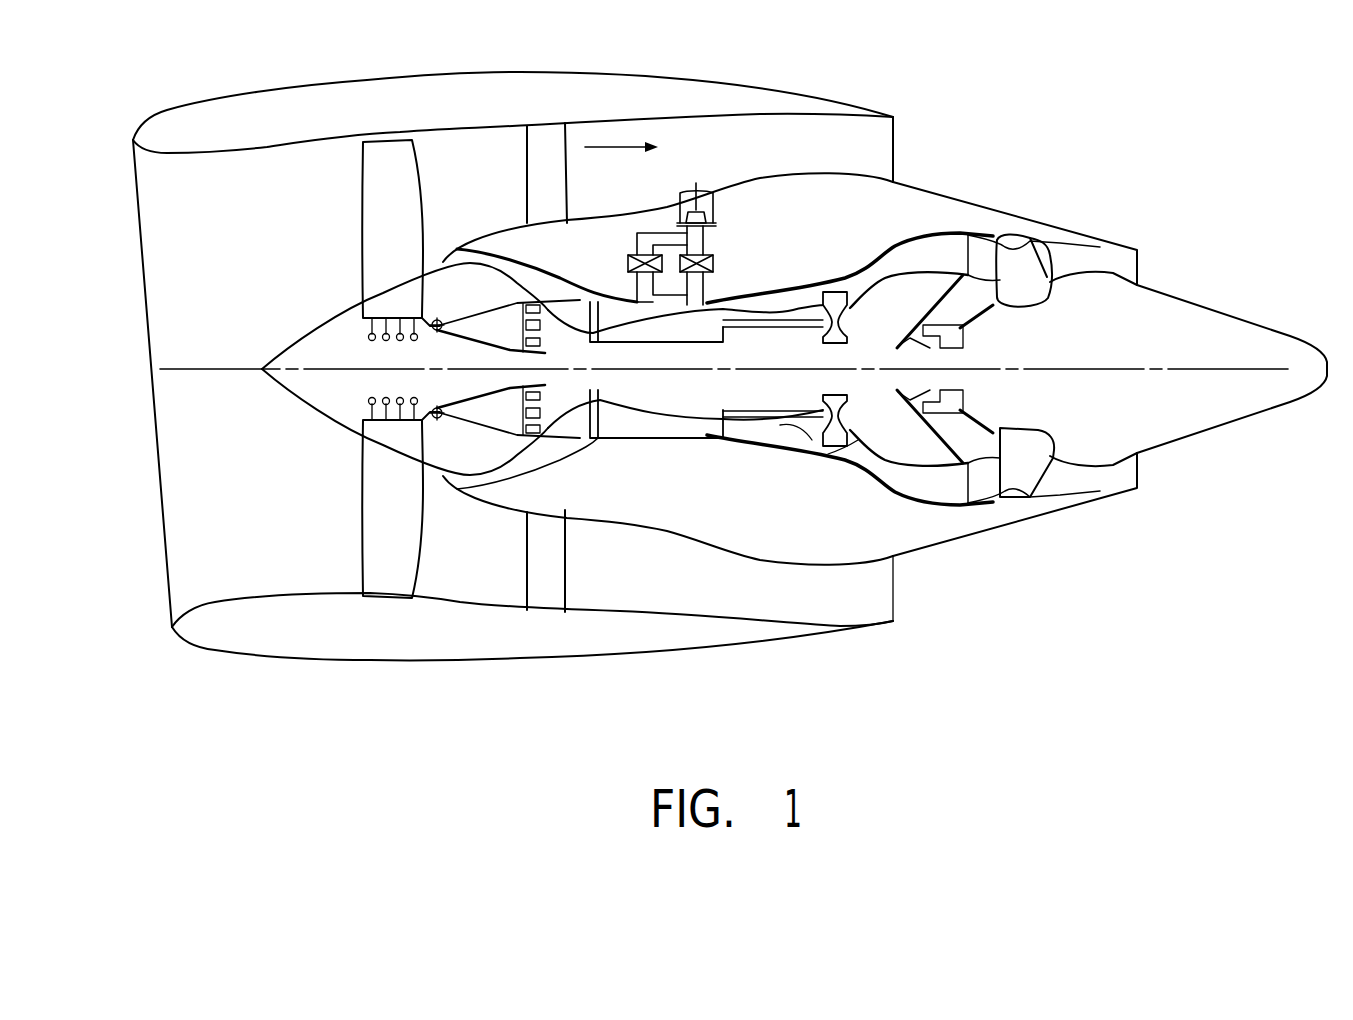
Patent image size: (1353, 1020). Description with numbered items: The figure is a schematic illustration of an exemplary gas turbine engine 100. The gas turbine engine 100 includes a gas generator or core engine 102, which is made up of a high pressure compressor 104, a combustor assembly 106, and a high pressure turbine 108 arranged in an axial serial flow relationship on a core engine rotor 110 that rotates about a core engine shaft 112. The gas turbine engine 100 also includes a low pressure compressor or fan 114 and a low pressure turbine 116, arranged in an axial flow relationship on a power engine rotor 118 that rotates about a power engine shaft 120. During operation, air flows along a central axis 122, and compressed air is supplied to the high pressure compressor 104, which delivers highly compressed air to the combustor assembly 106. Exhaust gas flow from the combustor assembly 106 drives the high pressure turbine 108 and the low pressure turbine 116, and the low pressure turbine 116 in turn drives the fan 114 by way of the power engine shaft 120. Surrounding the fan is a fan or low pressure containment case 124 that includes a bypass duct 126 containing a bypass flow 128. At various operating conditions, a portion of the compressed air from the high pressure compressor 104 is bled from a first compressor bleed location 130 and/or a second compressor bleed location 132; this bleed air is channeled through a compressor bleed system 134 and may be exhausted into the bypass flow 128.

The gas turbine engine 100 is at (517, 334).
The core engine 102 is at (795, 271).
The high pressure compressor 104 is at (608, 312).
The combustor assembly 106 is at (790, 298).
The high pressure turbine 108 is at (818, 464).
The core engine rotor 110 is at (865, 314).
The core engine shaft 112 is at (800, 428).
The fan 114 is at (388, 212).
The low pressure turbine 116 is at (935, 250).
The power engine rotor 118 is at (473, 341).
The power engine shaft 120 is at (600, 392).
The central axis 122 is at (1080, 360).
The low pressure containment case 124 is at (104, 170).
The bypass duct 126 is at (660, 143).
The bypass flow 128 is at (605, 140).
The first compressor bleed location 130 is at (633, 285).
The second compressor bleed location 132 is at (710, 299).
The compressor bleed system 134 is at (752, 219).